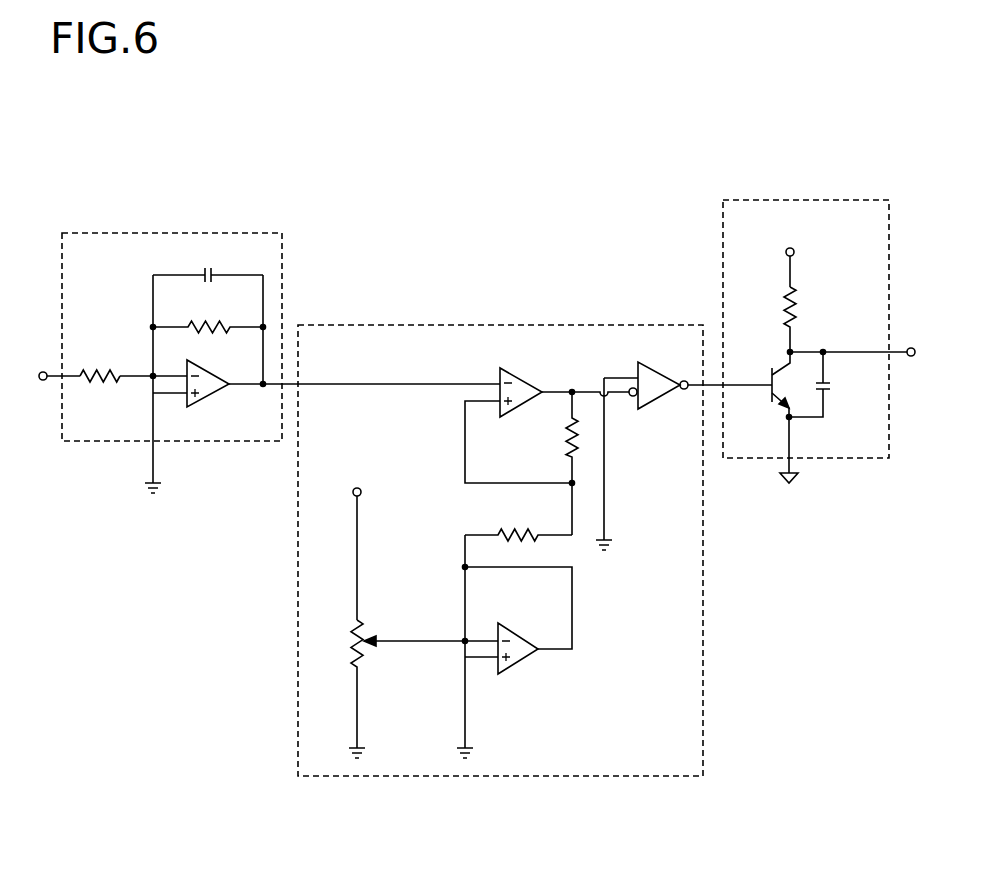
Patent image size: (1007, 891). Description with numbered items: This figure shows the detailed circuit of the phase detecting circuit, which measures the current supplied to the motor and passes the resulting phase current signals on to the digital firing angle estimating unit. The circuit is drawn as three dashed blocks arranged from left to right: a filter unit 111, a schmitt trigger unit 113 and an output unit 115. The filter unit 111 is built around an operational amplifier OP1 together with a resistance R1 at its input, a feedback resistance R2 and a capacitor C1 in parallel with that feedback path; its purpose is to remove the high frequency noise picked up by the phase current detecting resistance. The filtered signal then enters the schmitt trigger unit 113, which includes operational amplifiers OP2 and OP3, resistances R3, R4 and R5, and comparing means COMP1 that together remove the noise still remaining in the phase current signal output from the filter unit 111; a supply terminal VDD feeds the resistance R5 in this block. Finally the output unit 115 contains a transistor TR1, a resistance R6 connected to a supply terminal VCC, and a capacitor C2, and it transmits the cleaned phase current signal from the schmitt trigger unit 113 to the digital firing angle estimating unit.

The filter unit 111 is at (282, 234).
The schmitt trigger unit 113 is at (298, 325).
The output unit 115 is at (723, 200).
The resistance R1 is at (100, 360).
The capacitor C1 is at (208, 259).
The resistance R2 is at (208, 310).
The operational amplifier OP1 is at (343, 397).
The operational amplifier OP2 is at (547, 410).
The comparing means COMP1 is at (658, 448).
The resistance R3 is at (551, 463).
The resistance R4 is at (518, 577).
The resistance R5 is at (385, 689).
The operational amplifier OP3 is at (514, 662).
The supply voltage VDD is at (358, 536).
The supply voltage VCC is at (790, 249).
The resistance R6 is at (768, 319).
The transistor TR1 is at (764, 417).
The capacitor C2 is at (827, 384).